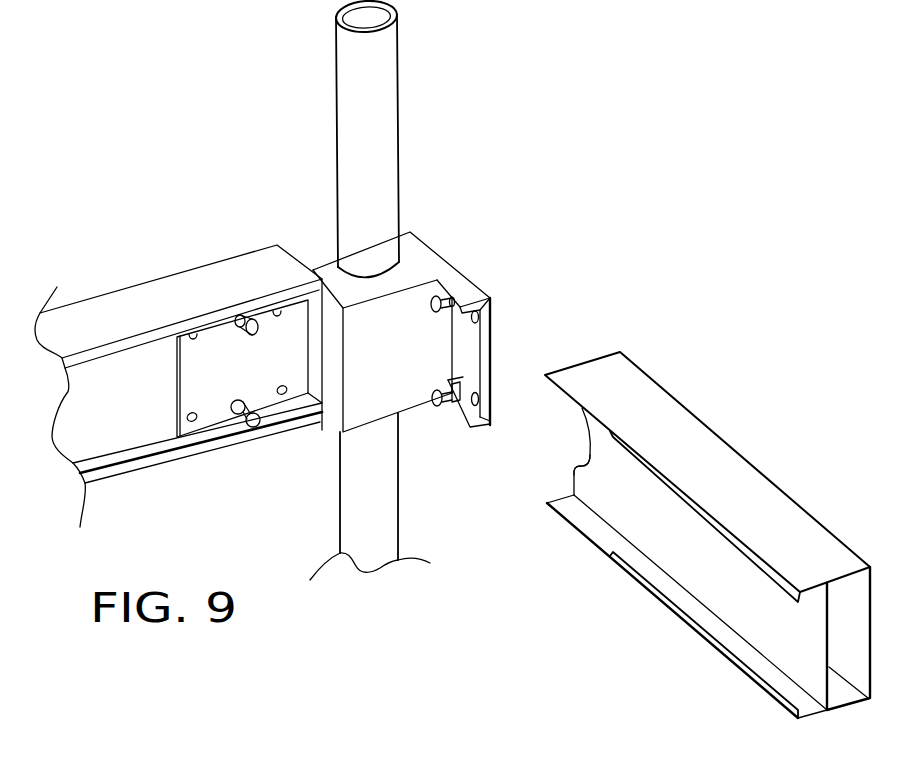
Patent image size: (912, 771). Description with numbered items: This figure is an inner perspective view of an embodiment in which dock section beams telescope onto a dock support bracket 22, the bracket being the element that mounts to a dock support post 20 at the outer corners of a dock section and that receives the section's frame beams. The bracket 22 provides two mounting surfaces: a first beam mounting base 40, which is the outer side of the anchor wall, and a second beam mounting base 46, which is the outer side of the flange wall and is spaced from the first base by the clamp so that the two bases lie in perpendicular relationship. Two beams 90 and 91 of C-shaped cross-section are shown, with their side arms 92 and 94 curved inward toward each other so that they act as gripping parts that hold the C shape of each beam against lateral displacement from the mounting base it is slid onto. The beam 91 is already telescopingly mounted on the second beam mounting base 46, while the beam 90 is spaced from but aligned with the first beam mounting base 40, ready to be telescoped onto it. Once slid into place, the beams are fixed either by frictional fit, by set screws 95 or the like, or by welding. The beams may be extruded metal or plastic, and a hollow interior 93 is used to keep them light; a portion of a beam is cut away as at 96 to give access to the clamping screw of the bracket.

The dock support post 20 is at (370, 152).
The dock support bracket 22 is at (446, 223).
The first beam mounting base 40 is at (463, 370).
The second beam mounting base 46 is at (230, 363).
The beam 90 is at (626, 410).
The beam 91 is at (129, 405).
The side arm 92 is at (723, 533).
The hollow interior 93 is at (850, 650).
The side arm 94 is at (735, 643).
The set screws 95 is at (433, 402).
The cut-away portion 96 is at (592, 443).